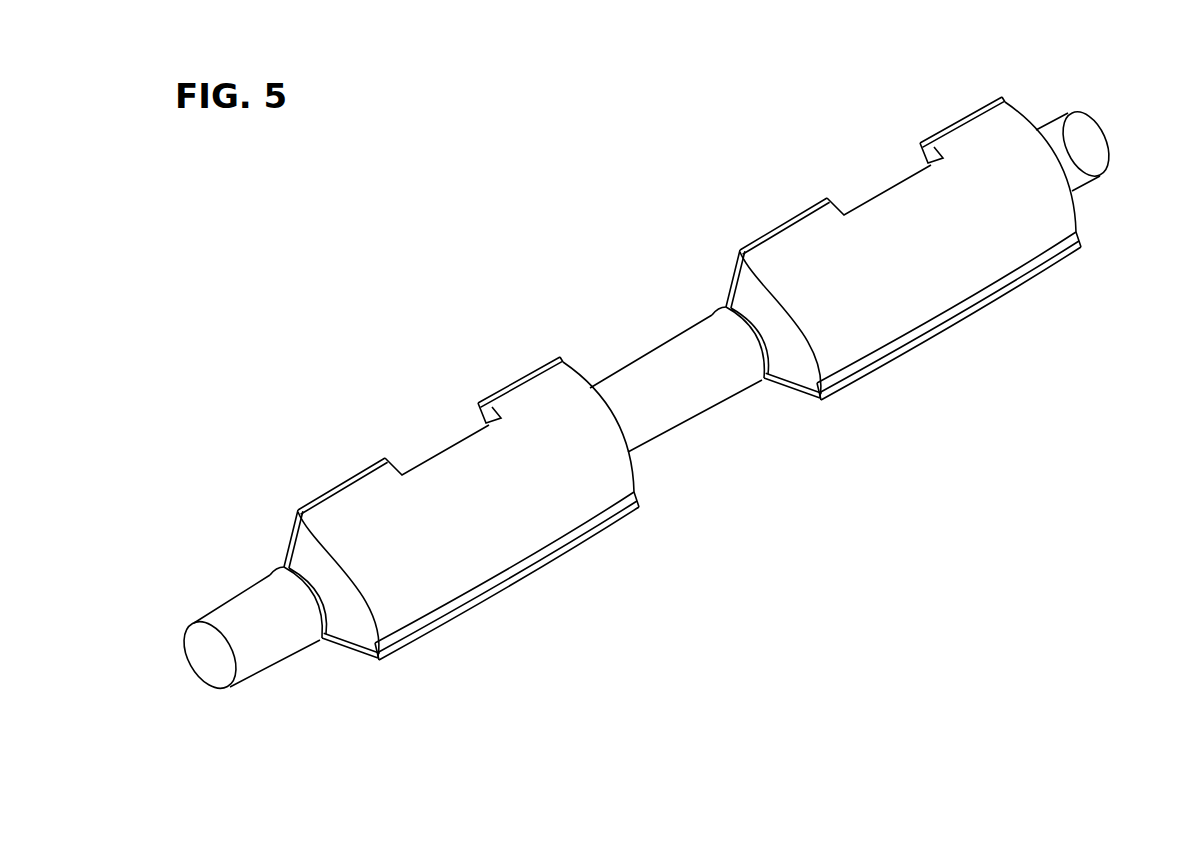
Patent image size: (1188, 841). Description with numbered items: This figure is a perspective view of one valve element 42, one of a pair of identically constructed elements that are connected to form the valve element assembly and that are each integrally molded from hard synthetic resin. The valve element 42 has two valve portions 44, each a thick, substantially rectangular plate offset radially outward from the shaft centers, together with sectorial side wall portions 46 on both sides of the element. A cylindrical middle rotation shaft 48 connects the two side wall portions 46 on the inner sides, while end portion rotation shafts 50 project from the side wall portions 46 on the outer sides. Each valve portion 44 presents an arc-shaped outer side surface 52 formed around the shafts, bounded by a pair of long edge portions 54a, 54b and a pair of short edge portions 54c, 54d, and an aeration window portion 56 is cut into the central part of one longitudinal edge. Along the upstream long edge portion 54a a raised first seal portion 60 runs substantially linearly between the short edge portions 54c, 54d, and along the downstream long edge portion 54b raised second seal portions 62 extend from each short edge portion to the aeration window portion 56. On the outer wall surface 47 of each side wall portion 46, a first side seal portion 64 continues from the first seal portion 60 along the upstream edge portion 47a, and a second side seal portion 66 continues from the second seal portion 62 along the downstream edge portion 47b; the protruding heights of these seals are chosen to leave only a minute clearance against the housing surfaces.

The valve element 42 is at (631, 407).
The valve portion 44 is at (442, 541).
The side wall portion 46 is at (248, 646).
The outer wall surface 47 is at (248, 646).
The one edge portion of the outer wall surface 47a is at (330, 646).
The other edge portion of the outer wall surface 47b is at (287, 552).
The middle rotation shaft 48 is at (703, 388).
The end portion rotation shaft 50 is at (222, 678).
The outer side surface 52 is at (855, 270).
The long edge portion 54a is at (440, 633).
The long edge portion 54b is at (353, 477).
The short edge portion 54c is at (297, 518).
The short edge portion 54d is at (584, 380).
The aeration window portion 56 is at (483, 413).
The first seal portion 60 is at (970, 322).
The second seal portion 62 is at (963, 122).
The first side seal portion 64 is at (793, 393).
The second side seal portion 66 is at (733, 268).